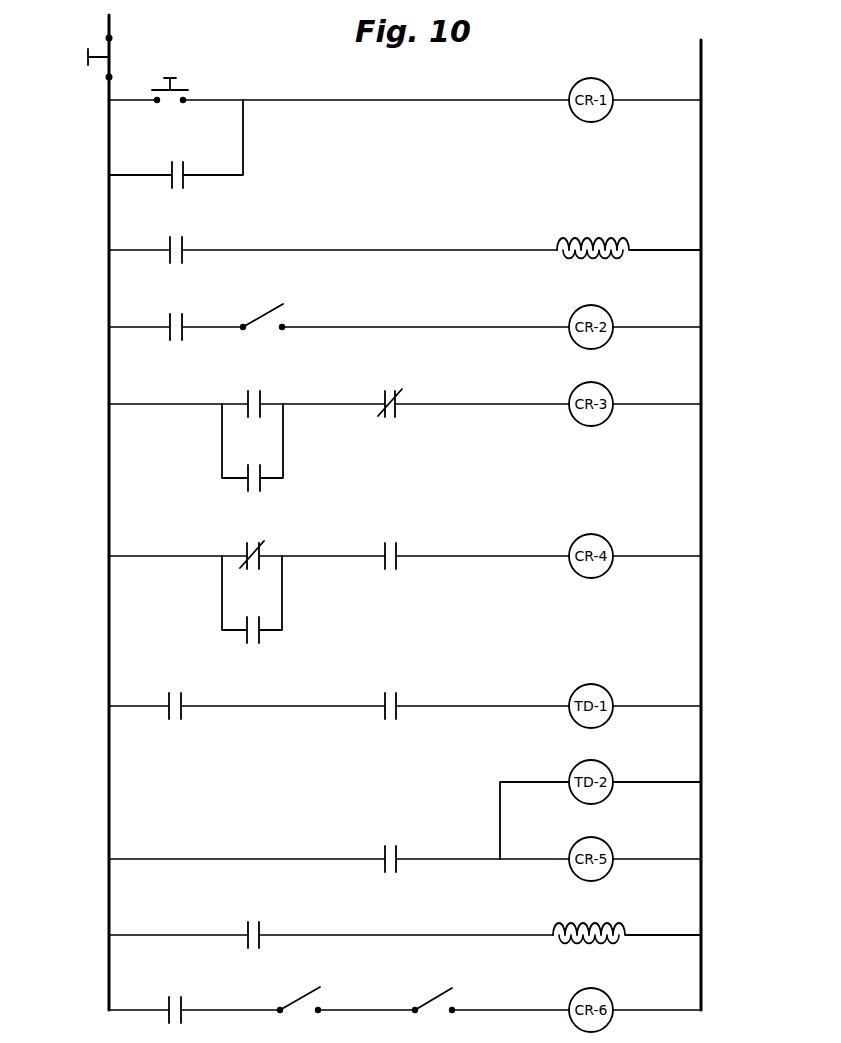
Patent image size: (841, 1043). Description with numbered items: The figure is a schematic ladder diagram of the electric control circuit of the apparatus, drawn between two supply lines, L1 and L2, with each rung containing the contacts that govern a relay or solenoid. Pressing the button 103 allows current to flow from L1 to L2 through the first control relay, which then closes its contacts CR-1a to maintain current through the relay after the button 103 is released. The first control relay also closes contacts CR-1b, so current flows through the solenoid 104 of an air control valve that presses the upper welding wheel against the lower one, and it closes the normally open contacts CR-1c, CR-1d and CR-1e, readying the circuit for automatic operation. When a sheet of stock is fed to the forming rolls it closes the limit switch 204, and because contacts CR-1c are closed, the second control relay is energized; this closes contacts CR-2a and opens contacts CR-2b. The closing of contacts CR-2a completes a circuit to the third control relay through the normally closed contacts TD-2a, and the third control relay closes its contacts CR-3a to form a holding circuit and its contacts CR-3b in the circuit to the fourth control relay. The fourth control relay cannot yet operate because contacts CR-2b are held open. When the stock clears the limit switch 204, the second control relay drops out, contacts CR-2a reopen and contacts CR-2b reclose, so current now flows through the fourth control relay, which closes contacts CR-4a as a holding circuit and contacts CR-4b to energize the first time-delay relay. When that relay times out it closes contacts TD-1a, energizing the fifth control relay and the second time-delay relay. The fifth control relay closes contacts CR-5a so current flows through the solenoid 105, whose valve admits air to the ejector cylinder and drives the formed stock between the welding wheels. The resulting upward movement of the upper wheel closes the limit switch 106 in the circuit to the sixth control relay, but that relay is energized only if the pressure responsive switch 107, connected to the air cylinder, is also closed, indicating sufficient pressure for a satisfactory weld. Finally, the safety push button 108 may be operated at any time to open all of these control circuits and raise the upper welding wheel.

The button 103 is at (180, 88).
The solenoid 104 is at (576, 238).
The solenoid 105 is at (568, 920).
The limit switch 106 is at (424, 996).
The pressure responsive switch 107 is at (296, 996).
The push button 108 is at (86, 58).
The limit switch 204 is at (253, 318).
The line L1 is at (702, 182).
The line L2 is at (108, 212).
The contacts CR-1a is at (182, 166).
The contacts CR-1b is at (183, 246).
The contacts CR-1c is at (182, 322).
The contacts CR-1d is at (180, 696).
The contacts CR-1e is at (178, 996).
The contacts CR-2a is at (259, 398).
The contacts CR-2b is at (265, 550).
The contacts CR-3a is at (262, 488).
The contacts CR-3b is at (392, 546).
The contacts CR-4a is at (255, 641).
The contacts CR-4b is at (391, 698).
The contacts CR-5a is at (256, 924).
The contacts TD-1a is at (392, 845).
The contacts TD-2a is at (388, 394).